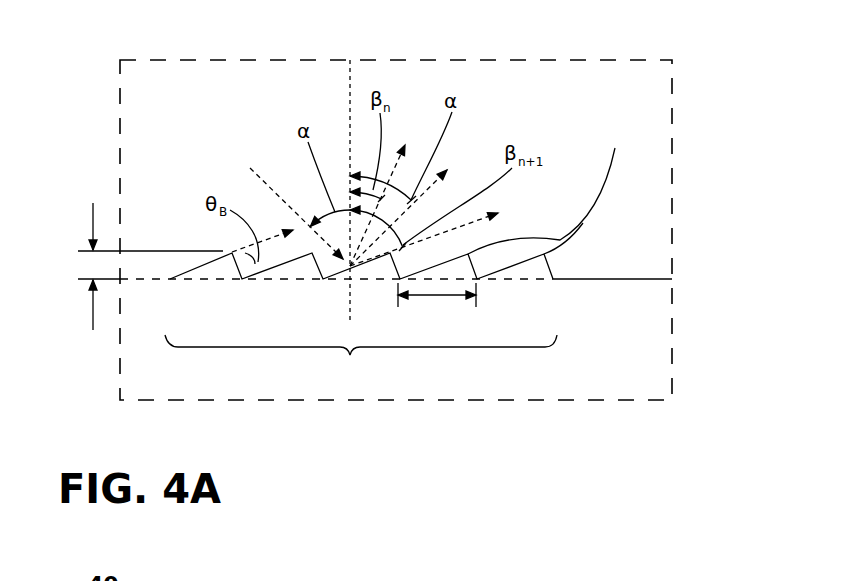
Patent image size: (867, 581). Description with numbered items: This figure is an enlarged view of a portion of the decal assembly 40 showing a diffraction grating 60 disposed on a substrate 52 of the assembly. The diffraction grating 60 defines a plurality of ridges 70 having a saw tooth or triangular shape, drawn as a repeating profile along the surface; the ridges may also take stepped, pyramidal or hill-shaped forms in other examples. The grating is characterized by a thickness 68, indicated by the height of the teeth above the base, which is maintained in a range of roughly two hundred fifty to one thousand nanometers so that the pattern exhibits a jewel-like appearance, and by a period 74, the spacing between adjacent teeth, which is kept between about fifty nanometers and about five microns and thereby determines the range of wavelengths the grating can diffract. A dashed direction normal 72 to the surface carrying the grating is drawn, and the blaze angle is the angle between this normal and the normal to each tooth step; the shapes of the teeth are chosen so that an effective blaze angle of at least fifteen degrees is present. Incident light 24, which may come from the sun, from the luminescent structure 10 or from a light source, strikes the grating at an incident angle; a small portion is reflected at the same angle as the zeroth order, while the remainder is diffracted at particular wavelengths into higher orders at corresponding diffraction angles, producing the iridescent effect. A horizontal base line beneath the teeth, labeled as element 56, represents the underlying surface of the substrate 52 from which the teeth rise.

The luminescent structure 10 is at (632, 328).
The incident light 24 is at (398, 192).
The decal assembly 40 is at (480, 85).
The substrate 52 is at (642, 164).
The base surface 56 is at (615, 276).
The diffraction grating 60 is at (361, 319).
The thickness 68 is at (93, 222).
The ridges 70 is at (551, 187).
The direction normal 72 is at (350, 88).
The period 74 is at (425, 296).